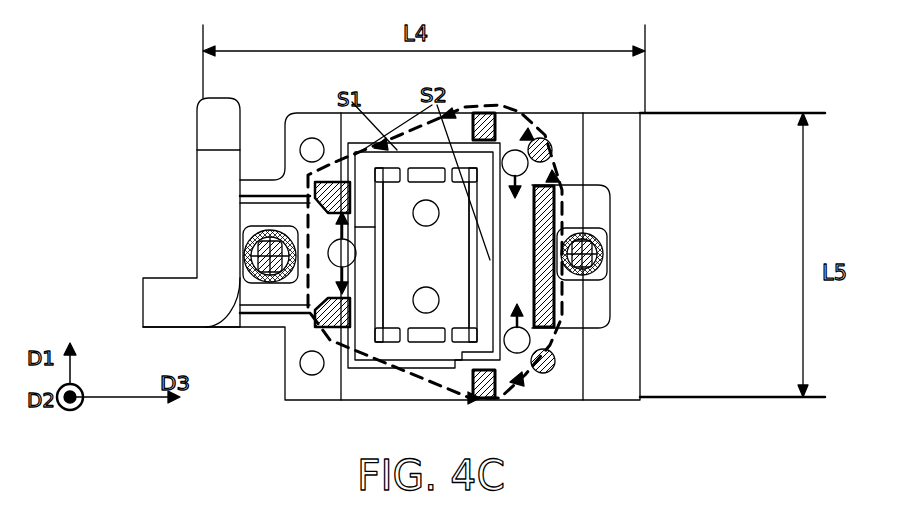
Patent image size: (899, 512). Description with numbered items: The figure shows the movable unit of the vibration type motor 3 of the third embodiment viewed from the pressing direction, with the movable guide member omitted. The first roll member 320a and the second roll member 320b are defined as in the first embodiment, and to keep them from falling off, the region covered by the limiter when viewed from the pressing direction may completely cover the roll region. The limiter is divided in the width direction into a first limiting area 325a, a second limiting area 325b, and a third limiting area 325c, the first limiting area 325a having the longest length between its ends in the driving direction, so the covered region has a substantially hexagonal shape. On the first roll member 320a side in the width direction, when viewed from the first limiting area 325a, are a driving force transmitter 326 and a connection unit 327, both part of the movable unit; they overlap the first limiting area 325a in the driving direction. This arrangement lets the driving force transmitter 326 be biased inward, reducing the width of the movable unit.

The vibration type motor 3 is at (767, 54).
The first roll member 320a is at (600, 258).
The second roll member 320b is at (318, 205).
The first limiting area 325a is at (505, 360).
The second limiting area 325b is at (313, 303).
The third limiting area 325c is at (550, 218).
The driving force transmitter 326 is at (653, 130).
The connection unit 327 is at (328, 137).